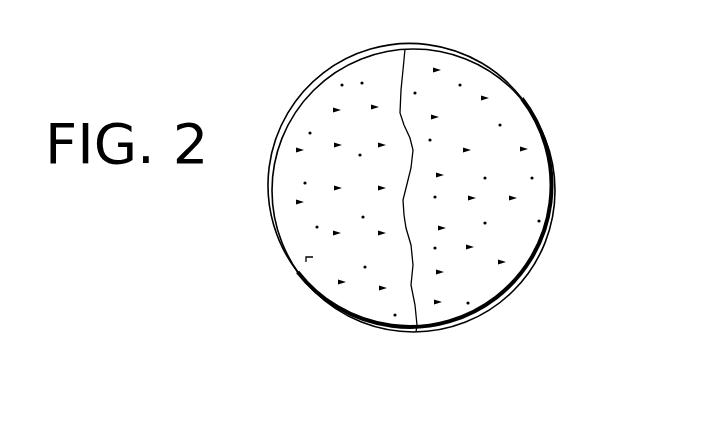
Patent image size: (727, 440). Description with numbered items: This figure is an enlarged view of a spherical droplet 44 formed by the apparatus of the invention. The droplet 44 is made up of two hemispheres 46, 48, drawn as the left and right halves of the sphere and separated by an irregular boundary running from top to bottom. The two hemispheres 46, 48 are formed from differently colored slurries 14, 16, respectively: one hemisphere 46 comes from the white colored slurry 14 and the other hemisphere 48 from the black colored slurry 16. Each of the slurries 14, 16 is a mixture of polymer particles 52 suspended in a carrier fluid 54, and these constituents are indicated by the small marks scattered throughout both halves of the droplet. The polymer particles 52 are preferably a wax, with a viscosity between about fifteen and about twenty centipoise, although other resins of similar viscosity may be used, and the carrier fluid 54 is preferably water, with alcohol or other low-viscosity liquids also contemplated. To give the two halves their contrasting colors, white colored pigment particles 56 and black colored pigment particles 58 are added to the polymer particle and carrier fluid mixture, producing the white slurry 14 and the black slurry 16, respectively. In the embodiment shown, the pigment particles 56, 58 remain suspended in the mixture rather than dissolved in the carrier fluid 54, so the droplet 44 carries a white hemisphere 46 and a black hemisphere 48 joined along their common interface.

The spherical droplet 44 is at (505, 71).
The white colored slurry 14 is at (307, 118).
The black colored slurry 16 is at (528, 193).
The polymer particles 52 is at (438, 66).
The carrier fluid 54 is at (342, 85).
The white colored pigment particles 56 is at (317, 227).
The black colored pigment particles 58 is at (539, 222).
The hemisphere 46 is at (298, 275).
The hemisphere 48 is at (485, 313).